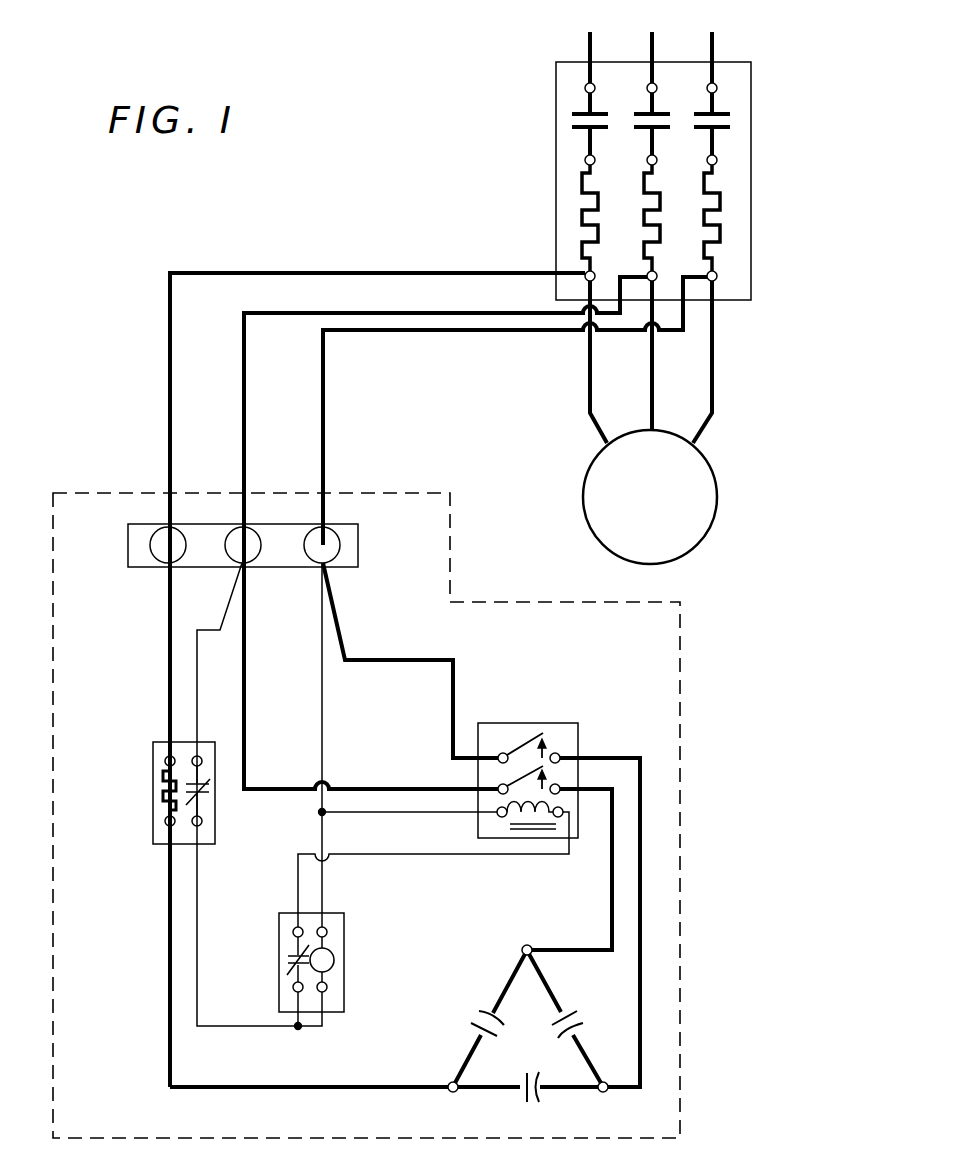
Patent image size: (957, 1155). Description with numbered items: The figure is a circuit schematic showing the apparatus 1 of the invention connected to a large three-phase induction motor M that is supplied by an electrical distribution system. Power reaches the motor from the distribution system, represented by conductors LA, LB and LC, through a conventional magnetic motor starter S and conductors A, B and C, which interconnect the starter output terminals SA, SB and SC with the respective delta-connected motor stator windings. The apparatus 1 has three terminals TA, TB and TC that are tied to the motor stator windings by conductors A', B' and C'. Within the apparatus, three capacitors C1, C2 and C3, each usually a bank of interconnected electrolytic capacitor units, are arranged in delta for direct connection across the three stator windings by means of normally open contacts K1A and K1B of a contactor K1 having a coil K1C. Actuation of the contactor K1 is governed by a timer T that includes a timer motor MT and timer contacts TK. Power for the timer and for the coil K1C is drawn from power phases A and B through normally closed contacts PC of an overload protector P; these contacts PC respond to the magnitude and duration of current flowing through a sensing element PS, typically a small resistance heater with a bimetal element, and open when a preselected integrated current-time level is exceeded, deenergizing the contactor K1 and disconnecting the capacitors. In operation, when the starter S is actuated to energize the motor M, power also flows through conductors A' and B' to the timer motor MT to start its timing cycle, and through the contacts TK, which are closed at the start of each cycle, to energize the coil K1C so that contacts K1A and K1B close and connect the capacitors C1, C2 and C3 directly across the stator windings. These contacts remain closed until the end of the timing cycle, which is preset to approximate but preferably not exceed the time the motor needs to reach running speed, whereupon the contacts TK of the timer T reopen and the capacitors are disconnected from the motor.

The apparatus 1 is at (128, 494).
The magnetic motor starter S is at (556, 147).
The conductor LA is at (714, 50).
The conductor LB is at (650, 50).
The conductor LC is at (588, 50).
The starter output terminal SA is at (716, 280).
The starter output terminal SB is at (655, 274).
The starter output terminal SC is at (593, 273).
The conductor A' is at (515, 411).
The conductor B' is at (445, 533).
The conductor C' is at (377, 662).
The conductor A is at (724, 362).
The conductor B is at (672, 356).
The conductor C is at (608, 362).
The three-phase induction motor M is at (665, 512).
The terminal TA is at (322, 545).
The terminal TB is at (243, 545).
The terminal TC is at (168, 545).
The overload protector P is at (174, 785).
The sensing element PS is at (165, 796).
The normally closed contacts PC is at (208, 780).
The contactor K1 is at (469, 804).
The normally open contact K1A is at (544, 732).
The normally open contact K1B is at (516, 780).
The coil K1C is at (498, 819).
The timer T is at (304, 962).
The timer contacts TK is at (290, 975).
The timer motor MT is at (335, 968).
The capacitor C1 is at (540, 1091).
The capacitor C2 is at (572, 1013).
The capacitor C3 is at (478, 1012).